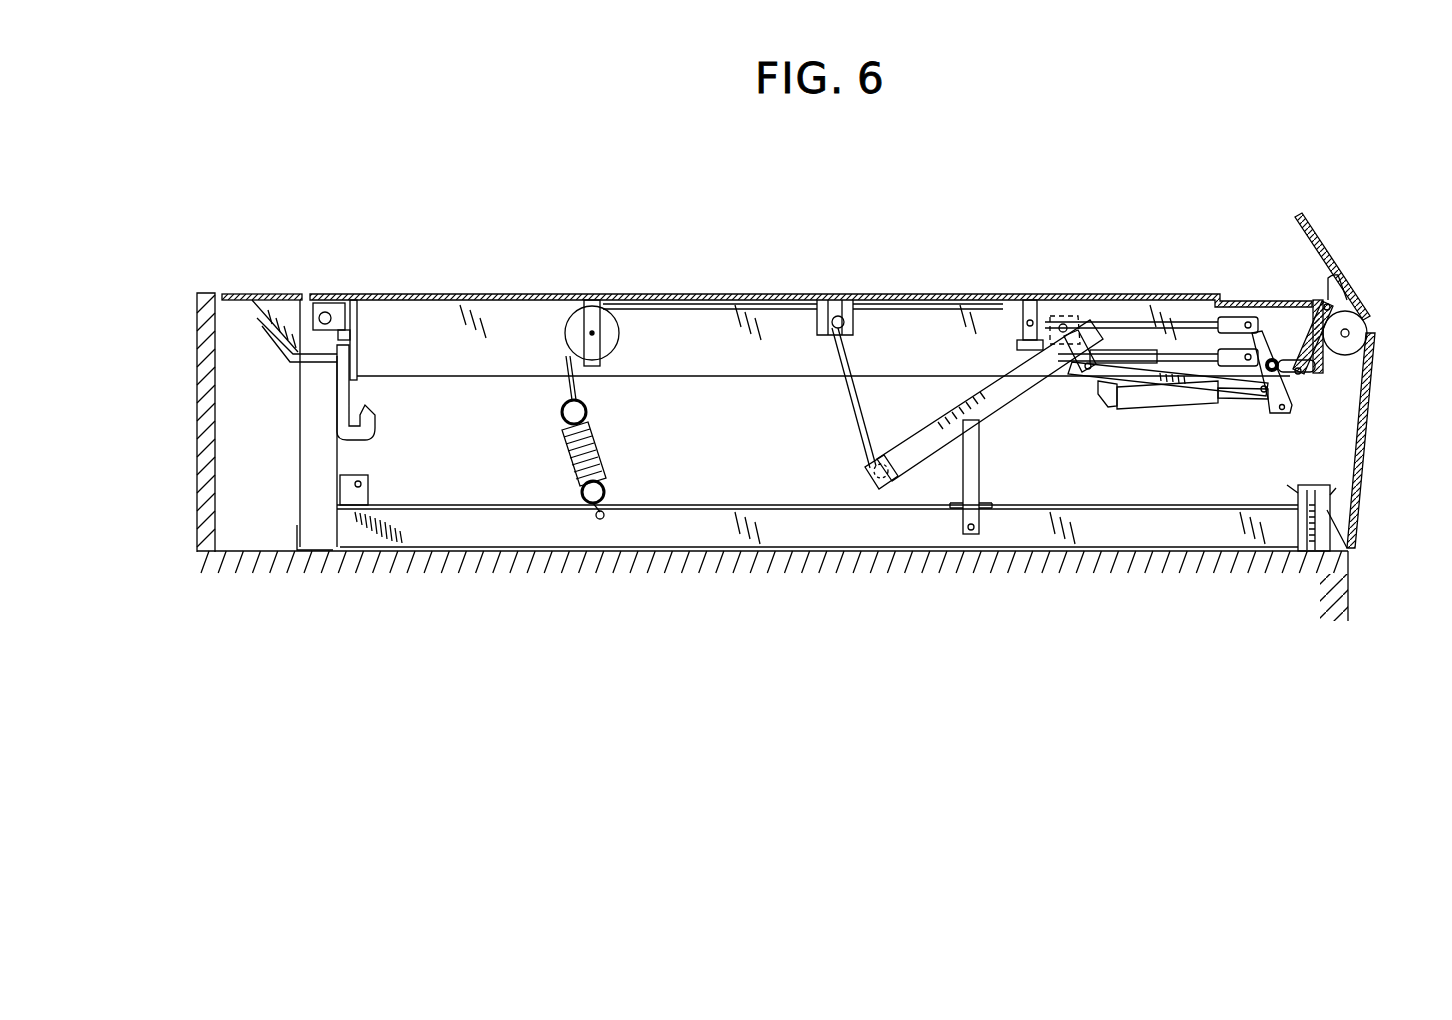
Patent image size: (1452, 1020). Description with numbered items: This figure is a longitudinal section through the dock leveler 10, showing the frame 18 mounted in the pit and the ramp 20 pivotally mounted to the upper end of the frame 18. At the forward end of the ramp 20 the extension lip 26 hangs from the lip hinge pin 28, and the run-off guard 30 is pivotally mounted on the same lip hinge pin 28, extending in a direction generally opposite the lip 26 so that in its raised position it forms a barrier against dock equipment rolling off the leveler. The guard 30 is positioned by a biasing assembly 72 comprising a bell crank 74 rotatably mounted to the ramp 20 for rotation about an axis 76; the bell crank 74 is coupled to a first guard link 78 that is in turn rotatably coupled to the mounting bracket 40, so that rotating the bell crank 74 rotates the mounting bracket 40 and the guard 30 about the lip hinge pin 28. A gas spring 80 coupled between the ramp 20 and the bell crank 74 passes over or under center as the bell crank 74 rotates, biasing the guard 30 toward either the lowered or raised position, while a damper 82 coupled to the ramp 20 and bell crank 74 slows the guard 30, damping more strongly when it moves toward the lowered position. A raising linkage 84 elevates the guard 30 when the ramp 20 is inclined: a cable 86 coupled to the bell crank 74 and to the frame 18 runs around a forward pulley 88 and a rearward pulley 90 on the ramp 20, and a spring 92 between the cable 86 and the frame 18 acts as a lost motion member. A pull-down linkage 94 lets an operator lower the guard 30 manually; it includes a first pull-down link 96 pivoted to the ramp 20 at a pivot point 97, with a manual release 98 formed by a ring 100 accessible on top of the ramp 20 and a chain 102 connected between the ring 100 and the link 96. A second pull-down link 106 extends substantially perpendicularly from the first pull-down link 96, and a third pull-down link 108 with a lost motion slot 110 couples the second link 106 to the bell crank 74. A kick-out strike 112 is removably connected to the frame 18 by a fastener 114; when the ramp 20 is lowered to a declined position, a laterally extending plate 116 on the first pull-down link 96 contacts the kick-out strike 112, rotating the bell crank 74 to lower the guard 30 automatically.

The dock leveler 10 is at (832, 234).
The frame 18 is at (305, 508).
The ramp 20 is at (517, 294).
The extension lip 26 is at (1362, 437).
The lip hinge pin 28 is at (1349, 333).
The run-off guard 30 is at (1336, 244).
The mounting bracket 40 is at (1346, 282).
The biasing assembly 72 is at (1246, 428).
The bell crank 74 is at (1258, 331).
The axis 76 is at (1284, 374).
The first guard link 78 is at (1323, 364).
The gas spring 80 is at (1138, 349).
The damper 82 is at (1160, 409).
The raising linkage 84 is at (622, 438).
The cable 86 is at (652, 300).
The forward pulley 88 is at (1010, 318).
The rearward pulley 90 is at (567, 320).
The spring 92 is at (565, 458).
The pull-down linkage 94 is at (1052, 378).
The first pull-down link 96 is at (912, 452).
The pivot point 97 is at (1063, 324).
The manual release 98 is at (836, 358).
The ring 100 is at (838, 300).
The chain 102 is at (862, 418).
The second pull-down link 106 is at (1103, 330).
The third pull-down link 108 is at (1187, 368).
The lost motion slot 110 is at (1068, 374).
The kick-out strike 112 is at (972, 482).
The fastener 114 is at (974, 530).
The laterally extending plate 116 is at (957, 397).